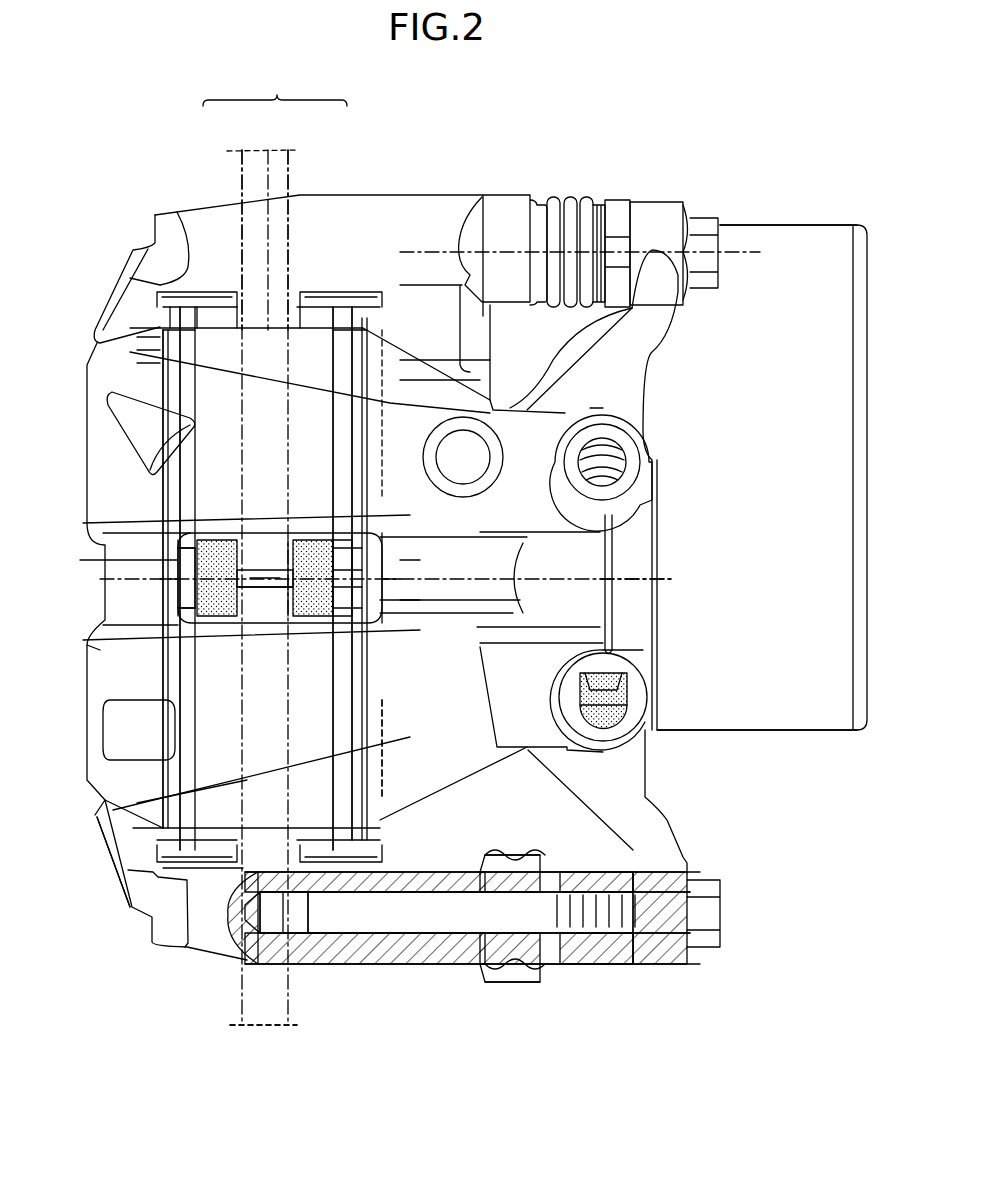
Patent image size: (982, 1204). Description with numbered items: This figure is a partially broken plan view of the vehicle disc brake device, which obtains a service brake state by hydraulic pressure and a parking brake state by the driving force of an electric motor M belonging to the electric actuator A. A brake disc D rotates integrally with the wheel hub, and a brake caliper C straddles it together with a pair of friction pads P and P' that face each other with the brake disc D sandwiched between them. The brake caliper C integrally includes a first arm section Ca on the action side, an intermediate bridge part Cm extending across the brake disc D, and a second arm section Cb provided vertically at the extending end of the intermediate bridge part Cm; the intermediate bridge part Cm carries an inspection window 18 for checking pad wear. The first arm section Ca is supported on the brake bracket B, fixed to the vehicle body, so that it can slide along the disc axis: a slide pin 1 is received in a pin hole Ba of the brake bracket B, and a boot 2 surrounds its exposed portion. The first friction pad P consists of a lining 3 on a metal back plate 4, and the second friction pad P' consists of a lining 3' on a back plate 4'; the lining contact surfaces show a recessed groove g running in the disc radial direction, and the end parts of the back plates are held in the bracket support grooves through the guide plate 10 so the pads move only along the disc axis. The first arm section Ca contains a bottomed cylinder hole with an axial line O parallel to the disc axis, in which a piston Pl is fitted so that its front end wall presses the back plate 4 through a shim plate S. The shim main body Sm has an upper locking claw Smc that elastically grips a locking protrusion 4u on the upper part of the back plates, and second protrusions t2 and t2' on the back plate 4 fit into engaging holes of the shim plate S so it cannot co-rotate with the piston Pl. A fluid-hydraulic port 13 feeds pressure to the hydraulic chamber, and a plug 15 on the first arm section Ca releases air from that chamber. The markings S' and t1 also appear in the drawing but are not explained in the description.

The slide pin 1 is at (382, 925).
The boot 2 is at (560, 982).
The lining 3 is at (318, 578).
The lining 3' is at (211, 578).
The back plate 4 is at (345, 573).
The back plate 4' is at (185, 579).
The locking protrusion 4u is at (343, 540).
The guide plate 10 is at (400, 852).
The fluid-hydraulic port 13 is at (612, 462).
The plug 15 is at (613, 740).
The inspection window 18 is at (175, 545).
The electric actuator A is at (740, 745).
The brake bracket B is at (168, 952).
The pin hole Ba is at (287, 925).
The brake caliper C is at (275, 89).
The first arm section Ca is at (403, 343).
The second arm section Cb is at (147, 320).
The intermediate bridge part Cm is at (267, 323).
The brake disc D is at (242, 992).
The electric motor M is at (790, 245).
The axial line O is at (645, 577).
The first friction pad P is at (333, 526).
The second friction pad P' is at (201, 526).
The piston Pl is at (400, 600).
The shim plate S is at (401, 555).
The surface S' is at (108, 651).
The shim main body Sm is at (400, 560).
The upper locking claw Smc is at (175, 590).
The recessed groove g is at (280, 600).
The thickness t1 is at (395, 605).
The second protrusion t2 is at (411, 750).
The second protrusion t2' is at (396, 450).